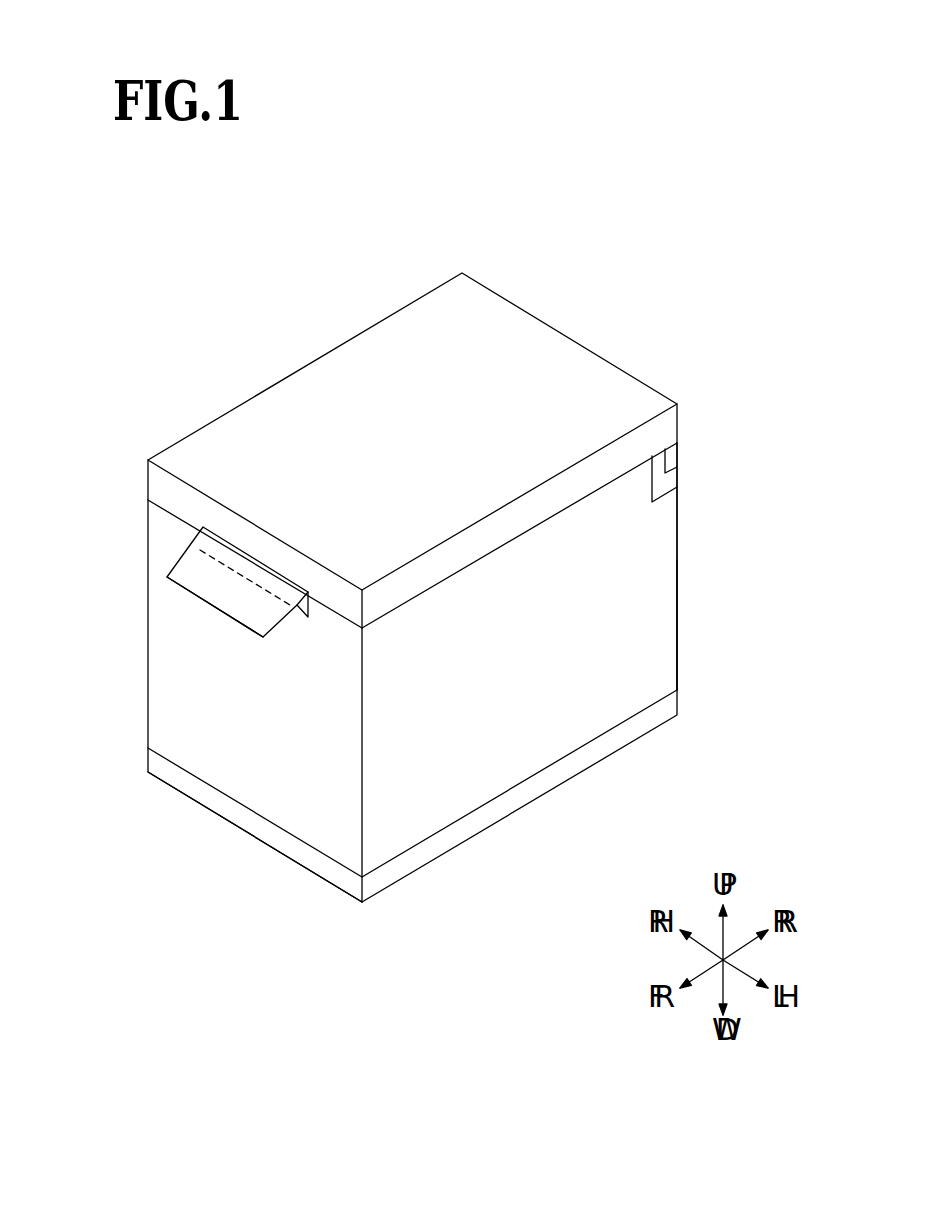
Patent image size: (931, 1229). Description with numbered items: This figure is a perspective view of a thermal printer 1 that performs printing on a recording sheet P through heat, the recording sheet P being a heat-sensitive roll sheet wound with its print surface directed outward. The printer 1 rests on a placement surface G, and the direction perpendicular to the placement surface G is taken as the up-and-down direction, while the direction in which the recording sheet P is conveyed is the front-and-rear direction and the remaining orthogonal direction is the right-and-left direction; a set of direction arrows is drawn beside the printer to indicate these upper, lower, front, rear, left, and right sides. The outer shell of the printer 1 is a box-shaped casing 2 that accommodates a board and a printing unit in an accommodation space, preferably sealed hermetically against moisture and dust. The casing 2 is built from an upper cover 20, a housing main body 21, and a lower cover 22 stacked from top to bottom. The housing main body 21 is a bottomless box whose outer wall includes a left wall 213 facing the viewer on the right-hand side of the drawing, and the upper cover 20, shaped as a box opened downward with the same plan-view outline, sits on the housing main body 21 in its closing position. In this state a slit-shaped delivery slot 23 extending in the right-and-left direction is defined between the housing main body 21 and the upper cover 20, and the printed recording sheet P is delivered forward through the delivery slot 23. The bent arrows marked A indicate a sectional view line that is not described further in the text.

The printer 1 is at (132, 363).
The casing 2 is at (750, 577).
The upper cover 20 is at (612, 382).
The housing main body 21 is at (663, 522).
The left wall 213 is at (662, 650).
The lower cover 22 is at (662, 710).
The delivery slot 23 is at (203, 531).
The recording sheet P is at (185, 560).
The placement surface G is at (230, 951).
The section line A- A is at (632, 300).